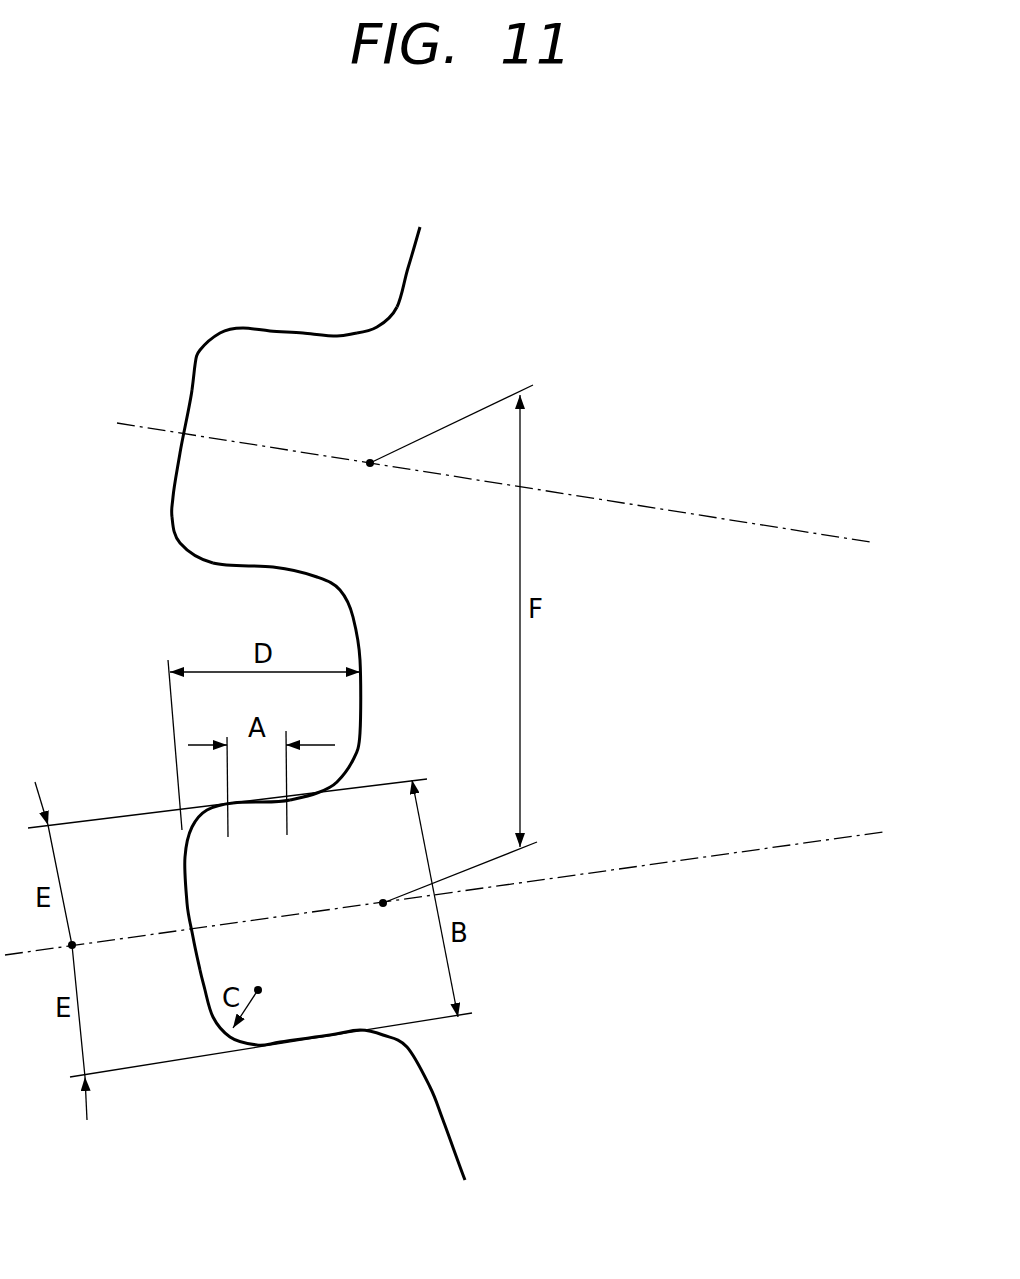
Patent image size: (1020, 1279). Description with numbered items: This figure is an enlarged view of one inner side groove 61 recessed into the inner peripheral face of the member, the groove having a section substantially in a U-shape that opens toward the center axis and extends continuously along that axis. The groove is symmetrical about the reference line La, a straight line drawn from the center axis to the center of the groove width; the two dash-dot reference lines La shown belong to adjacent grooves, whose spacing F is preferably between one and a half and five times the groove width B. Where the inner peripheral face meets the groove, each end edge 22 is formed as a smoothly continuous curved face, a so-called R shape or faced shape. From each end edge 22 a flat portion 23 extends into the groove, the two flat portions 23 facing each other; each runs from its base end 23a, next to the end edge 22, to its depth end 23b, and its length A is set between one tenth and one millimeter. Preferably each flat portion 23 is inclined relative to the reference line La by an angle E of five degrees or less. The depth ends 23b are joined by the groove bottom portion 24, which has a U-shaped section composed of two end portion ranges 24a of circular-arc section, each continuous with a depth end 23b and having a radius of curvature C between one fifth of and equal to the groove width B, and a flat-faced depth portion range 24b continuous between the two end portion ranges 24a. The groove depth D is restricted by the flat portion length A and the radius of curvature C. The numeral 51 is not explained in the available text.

The roller 51 is at (360, 253).
The inner side groove 61 is at (265, 328).
The end edge 22 is at (372, 330).
The flat portion 23 is at (297, 332).
The base end 23a is at (290, 802).
The depth end 23b is at (228, 803).
The groove bottom portion 24 is at (172, 493).
The end portion range 24a is at (218, 330).
The depth portion range 24b is at (178, 455).
The reference line La is at (748, 517).